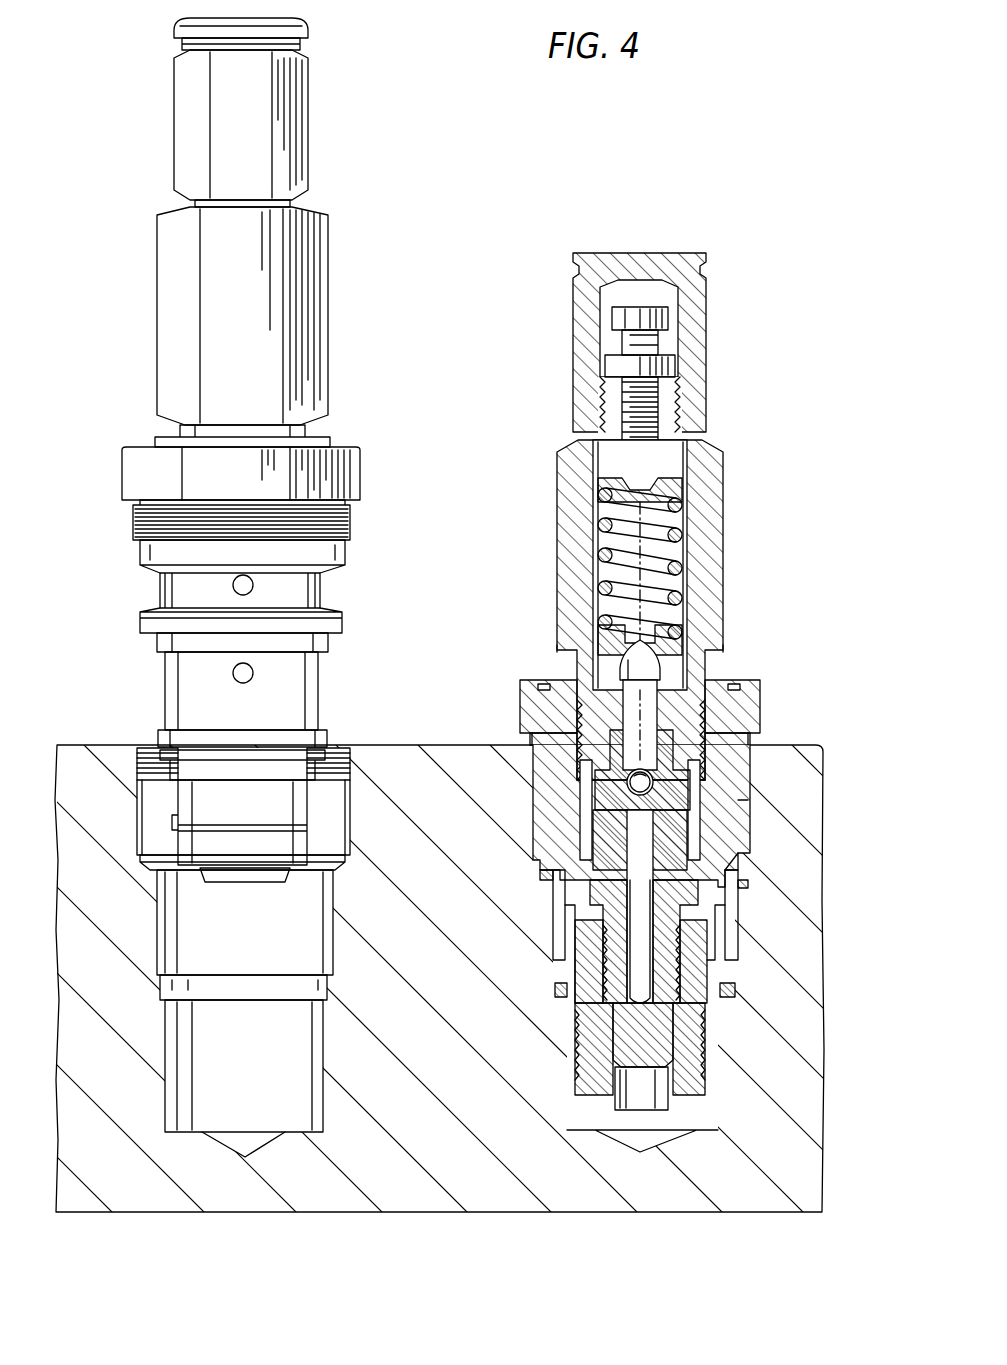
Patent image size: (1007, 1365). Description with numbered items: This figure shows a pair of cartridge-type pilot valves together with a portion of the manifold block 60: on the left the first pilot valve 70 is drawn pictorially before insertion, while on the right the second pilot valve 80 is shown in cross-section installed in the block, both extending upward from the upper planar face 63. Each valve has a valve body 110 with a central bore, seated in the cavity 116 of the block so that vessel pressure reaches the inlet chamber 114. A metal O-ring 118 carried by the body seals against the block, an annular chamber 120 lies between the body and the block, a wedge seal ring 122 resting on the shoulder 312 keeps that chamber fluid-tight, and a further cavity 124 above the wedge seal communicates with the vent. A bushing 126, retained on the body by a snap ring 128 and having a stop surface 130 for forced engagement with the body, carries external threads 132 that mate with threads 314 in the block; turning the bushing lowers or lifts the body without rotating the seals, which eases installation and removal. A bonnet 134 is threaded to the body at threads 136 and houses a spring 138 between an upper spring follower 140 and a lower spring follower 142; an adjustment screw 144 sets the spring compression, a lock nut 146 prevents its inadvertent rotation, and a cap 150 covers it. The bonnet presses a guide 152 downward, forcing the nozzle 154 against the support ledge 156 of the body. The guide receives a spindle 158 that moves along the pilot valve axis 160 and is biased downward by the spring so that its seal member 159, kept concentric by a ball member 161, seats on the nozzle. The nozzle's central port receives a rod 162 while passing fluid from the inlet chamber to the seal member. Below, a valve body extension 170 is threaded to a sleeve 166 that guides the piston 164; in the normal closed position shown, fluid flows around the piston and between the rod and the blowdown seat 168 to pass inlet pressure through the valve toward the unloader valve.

The manifold block 60 is at (480, 1174).
The upper planar face 63 is at (395, 744).
The first pilot valve 70 is at (342, 293).
The second pilot valve 80 is at (534, 475).
The valve body 110 is at (160, 589).
The inlet chamber 114 is at (712, 1116).
The cavity 116 is at (266, 955).
The metal O-ring 118 is at (322, 750).
The annular chamber 120 is at (560, 915).
The wedge seal ring 122 is at (142, 860).
The cavity 124 is at (736, 816).
The bushing 126 is at (130, 468).
The snap ring 128 is at (736, 680).
The stop surface 130 is at (560, 790).
The external threads 132 is at (135, 522).
The bonnet 134 is at (712, 494).
The threads 136 is at (628, 676).
The spring 138 is at (682, 570).
The upper spring follower 140 is at (662, 478).
The lower spring follower 142 is at (676, 640).
The adjustment screw 144 is at (660, 420).
The lock nut 146 is at (610, 364).
The cap 150 is at (706, 322).
The guide 152 is at (752, 724).
The nozzle 154 is at (740, 841).
The support ledge 156 is at (736, 890).
The spindle 158 is at (600, 706).
The seal member 159 is at (590, 800).
The pilot valve axis 160 is at (636, 580).
The ball member 161 is at (656, 782).
The rod 162 is at (556, 956).
The piston 164 is at (622, 1076).
The sleeve 166 is at (600, 1030).
The blowdown seat 168 is at (750, 944).
The valve body extension 170 is at (700, 1055).
The shoulder 312 is at (332, 874).
The threads 314 is at (142, 752).